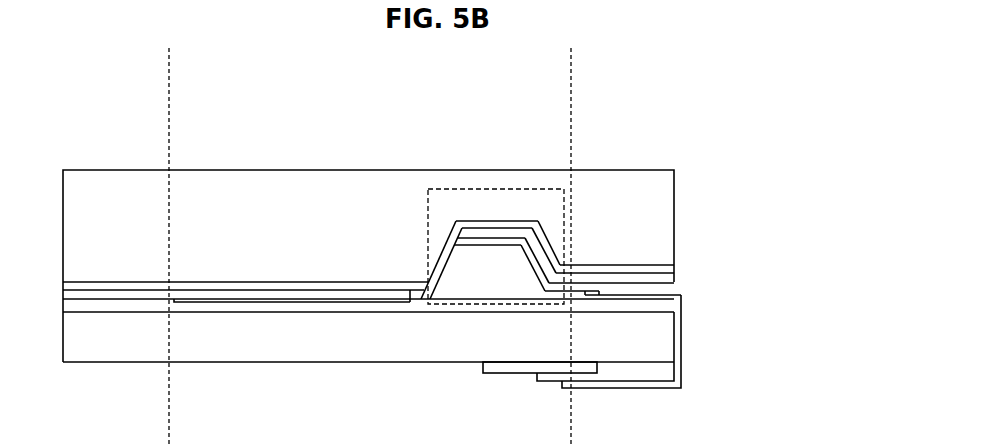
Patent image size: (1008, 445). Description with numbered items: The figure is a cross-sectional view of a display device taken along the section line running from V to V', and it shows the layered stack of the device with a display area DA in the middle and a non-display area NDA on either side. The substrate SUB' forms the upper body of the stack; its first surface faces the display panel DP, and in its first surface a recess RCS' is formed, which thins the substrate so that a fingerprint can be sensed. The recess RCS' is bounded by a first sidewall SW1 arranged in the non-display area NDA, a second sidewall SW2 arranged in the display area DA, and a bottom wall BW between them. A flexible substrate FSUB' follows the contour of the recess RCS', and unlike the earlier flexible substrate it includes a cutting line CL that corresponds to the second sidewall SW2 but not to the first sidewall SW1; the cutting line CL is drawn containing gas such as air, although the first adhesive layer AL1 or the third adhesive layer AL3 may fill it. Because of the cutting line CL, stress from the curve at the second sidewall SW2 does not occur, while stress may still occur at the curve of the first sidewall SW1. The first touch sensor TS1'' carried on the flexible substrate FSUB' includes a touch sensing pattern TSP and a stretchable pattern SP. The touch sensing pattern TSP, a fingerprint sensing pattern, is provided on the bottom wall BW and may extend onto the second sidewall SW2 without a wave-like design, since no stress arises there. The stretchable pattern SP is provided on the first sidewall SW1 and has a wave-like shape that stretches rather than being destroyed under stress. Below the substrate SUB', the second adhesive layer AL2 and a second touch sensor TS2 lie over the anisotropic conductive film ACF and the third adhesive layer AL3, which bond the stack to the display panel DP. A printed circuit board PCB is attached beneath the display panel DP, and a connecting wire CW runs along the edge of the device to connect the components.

The non-display area NDA is at (359, 64).
The display area DA is at (370, 246).
The substrate SUB' is at (343, 266).
The second adhesive layer AL2 is at (485, 267).
The second sidewall SW2 is at (450, 233).
The bottom wall BW is at (492, 220).
The flexible substrate FSUB' is at (496, 217).
The first sidewall SW1 is at (537, 228).
The recess RCS' is at (649, 228).
The touch sensing pattern TSP is at (512, 241).
The stretchable pattern SP is at (555, 252).
The first touch sensor TS1'' is at (683, 247).
The first adhesive layer AL1 is at (674, 266).
The anisotropic conductive film ACF is at (652, 290).
The third adhesive layer AL3 is at (655, 307).
The display panel DP is at (663, 340).
The connecting wire CW is at (683, 368).
The printed circuit board PCB is at (497, 373).
The second touch sensor TS2 is at (237, 303).
The cutting line CL is at (415, 305).
The section line start V is at (55, 390).
The section line end V' is at (700, 390).